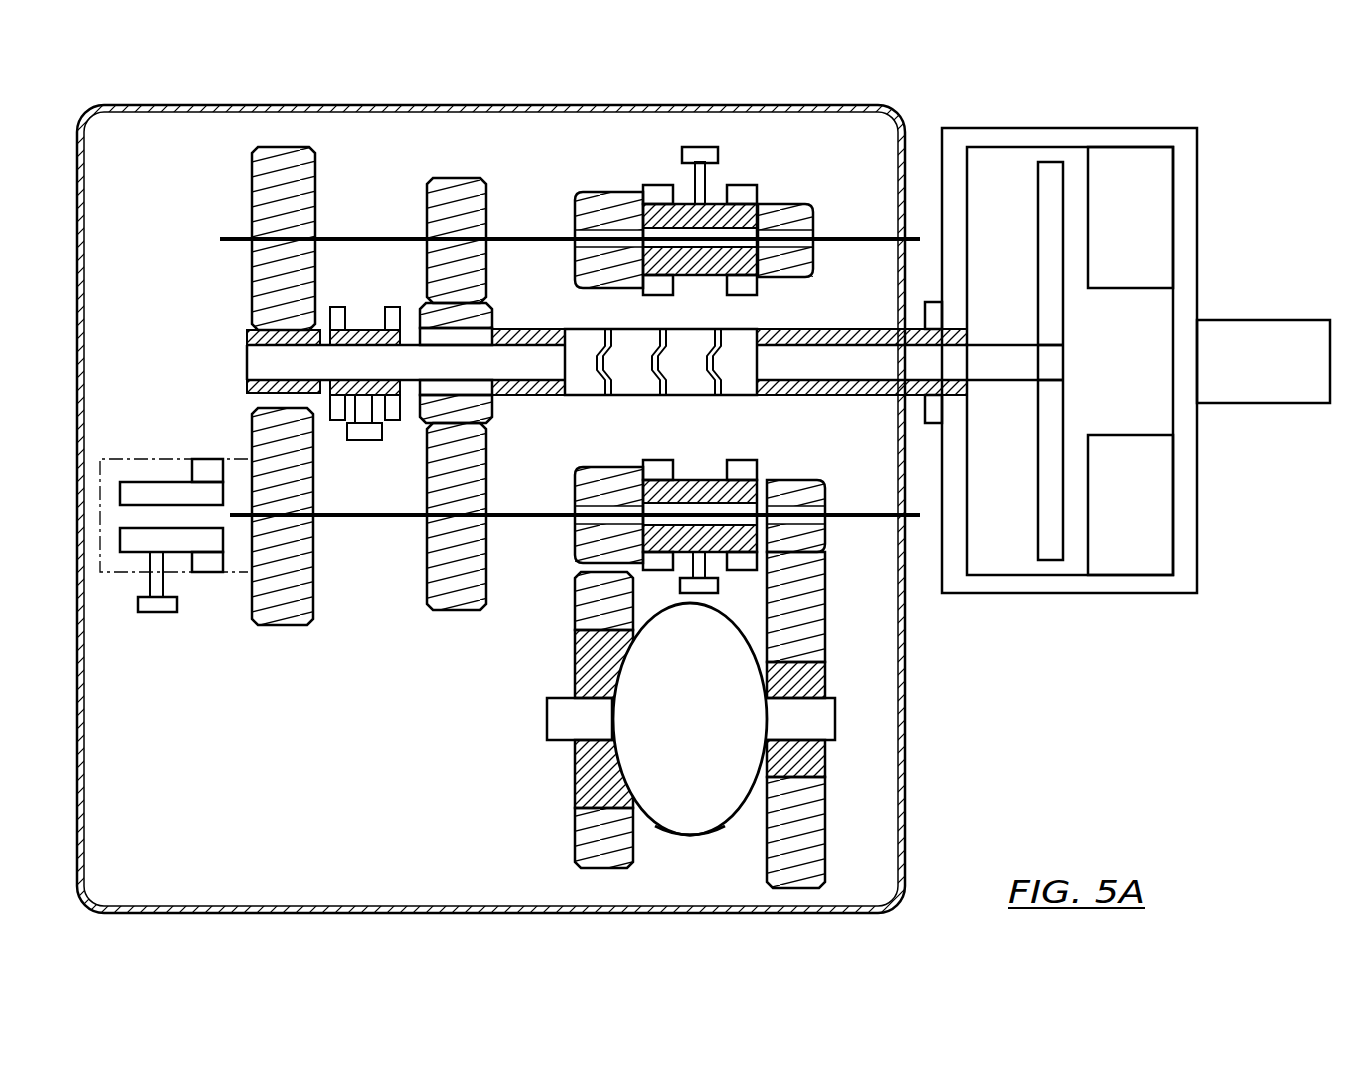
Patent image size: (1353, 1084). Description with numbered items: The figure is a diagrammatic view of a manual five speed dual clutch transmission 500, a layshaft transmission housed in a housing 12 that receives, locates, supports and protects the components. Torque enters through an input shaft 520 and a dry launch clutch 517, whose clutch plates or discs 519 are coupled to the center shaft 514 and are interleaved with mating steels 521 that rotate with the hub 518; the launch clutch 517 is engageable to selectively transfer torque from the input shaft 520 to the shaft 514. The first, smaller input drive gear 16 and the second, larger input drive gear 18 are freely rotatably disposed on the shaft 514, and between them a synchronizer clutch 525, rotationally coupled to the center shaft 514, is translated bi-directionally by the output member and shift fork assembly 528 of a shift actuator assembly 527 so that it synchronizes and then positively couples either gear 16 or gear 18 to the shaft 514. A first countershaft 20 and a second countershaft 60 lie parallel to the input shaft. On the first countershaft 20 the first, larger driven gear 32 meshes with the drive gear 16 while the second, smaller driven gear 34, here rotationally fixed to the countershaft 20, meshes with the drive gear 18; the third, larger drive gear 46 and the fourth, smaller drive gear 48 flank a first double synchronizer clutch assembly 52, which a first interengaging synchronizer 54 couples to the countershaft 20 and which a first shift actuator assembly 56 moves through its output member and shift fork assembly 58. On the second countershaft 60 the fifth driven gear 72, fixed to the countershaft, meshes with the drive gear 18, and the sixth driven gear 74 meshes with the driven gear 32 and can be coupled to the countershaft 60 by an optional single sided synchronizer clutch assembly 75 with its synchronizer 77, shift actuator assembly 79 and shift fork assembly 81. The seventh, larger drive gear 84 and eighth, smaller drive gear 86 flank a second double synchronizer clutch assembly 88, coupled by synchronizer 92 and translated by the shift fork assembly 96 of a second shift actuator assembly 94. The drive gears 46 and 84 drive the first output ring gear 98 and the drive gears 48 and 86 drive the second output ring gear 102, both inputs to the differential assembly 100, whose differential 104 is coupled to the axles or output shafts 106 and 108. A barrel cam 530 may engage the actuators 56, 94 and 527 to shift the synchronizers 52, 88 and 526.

The housing 12 is at (904, 126).
The first, smaller input drive gear 16 is at (252, 393).
The second, larger input drive gear 18 is at (492, 311).
The first countershaft 20 is at (868, 240).
The first, larger driven gear 32 is at (252, 181).
The second, smaller driven gear 34 is at (466, 178).
The third, larger drive gear 46 is at (586, 192).
The fourth, smaller drive gear 48 is at (790, 204).
The first double synchronizer clutch assembly 52 is at (735, 223).
The first interengaging synchronizer 54 is at (695, 267).
The first shift actuator assembly 56 is at (680, 154).
The output member and shift fork assembly 58 is at (695, 186).
The second countershaft 60 is at (866, 516).
The fifth, driven gear 72 is at (452, 611).
The sixth, driven gear 74 is at (275, 626).
The reverse dog clutch or single sided synchronizer clutch assembly 75 is at (172, 561).
The synchronizer 77 is at (243, 512).
The shift actuator assembly 79 is at (154, 620).
The output member and shift fork assembly 81 is at (166, 582).
The seventh, larger drive gear 84 is at (603, 467).
The eighth, smaller drive gear 86 is at (793, 480).
The second double synchronizer clutch assembly 88 is at (696, 510).
The synchronizer 92 is at (707, 500).
The second shift actuator assembly 94 is at (737, 591).
The output member and shift fork assembly 96 is at (680, 583).
The first output or ring gear 98 is at (575, 772).
The differential assembly 100 is at (735, 830).
The second output or ring gear 102 is at (825, 756).
The differential 104 is at (672, 833).
The axle or output shaft 106 is at (547, 716).
The axle or output shaft 108 is at (836, 720).
The manual five speed dual clutch transmission 500 is at (1127, 344).
The input shaft 514 is at (1010, 345).
The dry launch clutch 517 is at (1113, 344).
The hub 518 is at (1073, 128).
The clutch plates or discs 519 is at (1066, 331).
The input shaft 520 is at (1278, 320).
The mating steels 521 is at (1114, 290).
The synchronizer clutch 525 is at (370, 292).
The synchronizer 526 is at (350, 379).
The shift actuator assembly 527 is at (372, 454).
The output member and shift fork assembly 528 is at (376, 409).
The barrel cam 530 is at (753, 329).